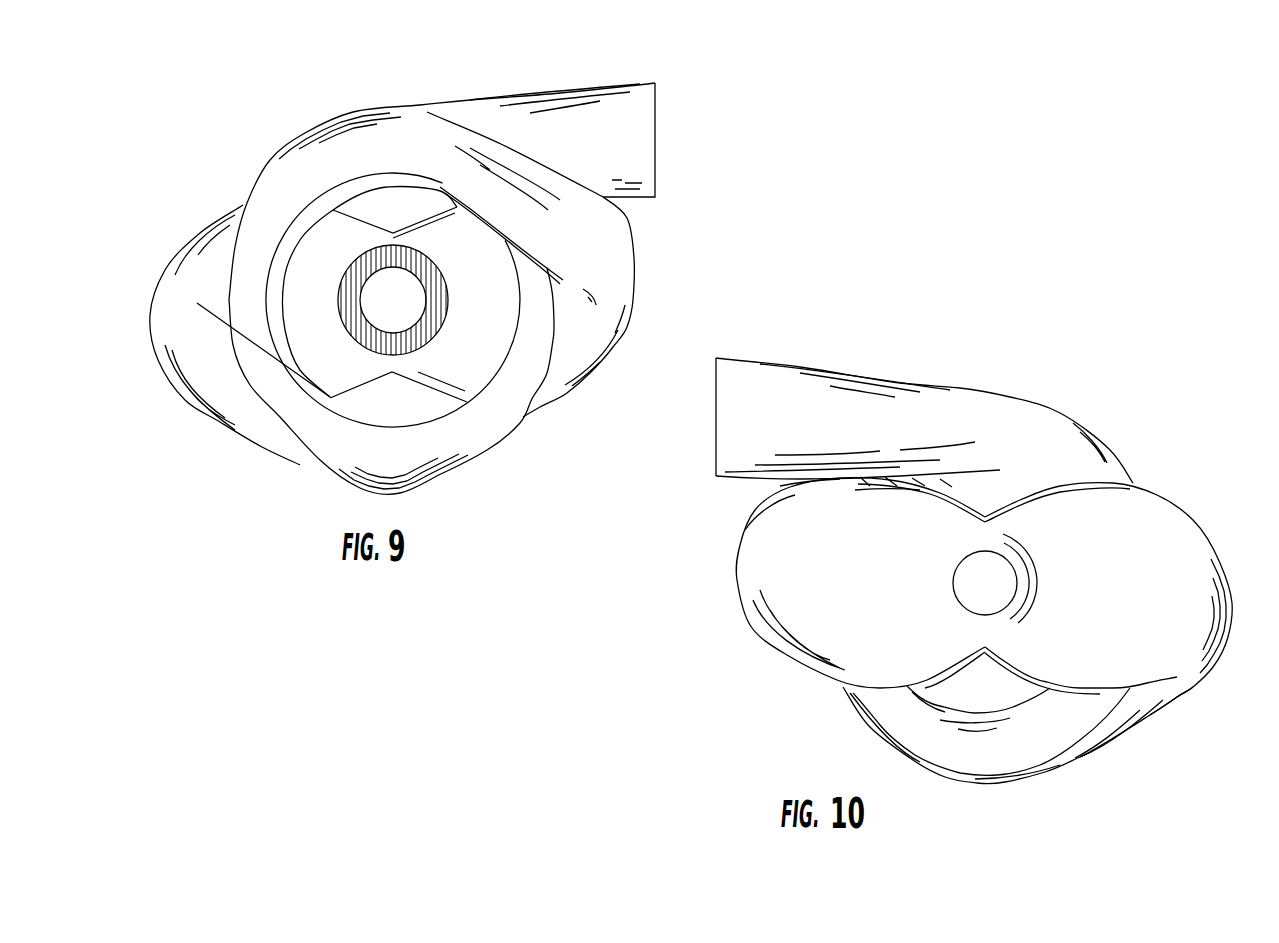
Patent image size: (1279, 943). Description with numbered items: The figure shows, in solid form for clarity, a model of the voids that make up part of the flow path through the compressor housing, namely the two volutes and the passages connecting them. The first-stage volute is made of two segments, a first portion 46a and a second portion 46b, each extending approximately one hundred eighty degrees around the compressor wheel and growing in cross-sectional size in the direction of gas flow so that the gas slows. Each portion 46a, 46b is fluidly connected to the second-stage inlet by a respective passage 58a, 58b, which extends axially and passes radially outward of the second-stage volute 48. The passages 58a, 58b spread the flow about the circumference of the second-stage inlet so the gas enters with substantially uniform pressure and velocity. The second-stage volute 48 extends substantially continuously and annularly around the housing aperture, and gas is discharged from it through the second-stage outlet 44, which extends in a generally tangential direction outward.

In FIG. 9, the second-stage outlet 44 is at (656, 112).
In FIG. 10, the second-stage outlet 44 is at (717, 403).
In FIG. 9, the first portion of the first-stage volute 46a is at (263, 177).
In FIG. 10, the first portion of the first-stage volute 46a is at (947, 477).
In FIG. 9, the second portion of the first-stage volute 46b is at (515, 418).
In FIG. 10, the second portion of the first-stage volute 46b is at (1000, 783).
In FIG. 9, the second-stage volute 48 is at (283, 347).
In FIG. 10, the second-stage volute 48 is at (1037, 422).
In FIG. 9, the first passage 58a is at (627, 280).
In FIG. 10, the first passage 58a is at (818, 622).
In FIG. 9, the second passage 58b is at (163, 290).
In FIG. 10, the second passage 58b is at (1123, 520).